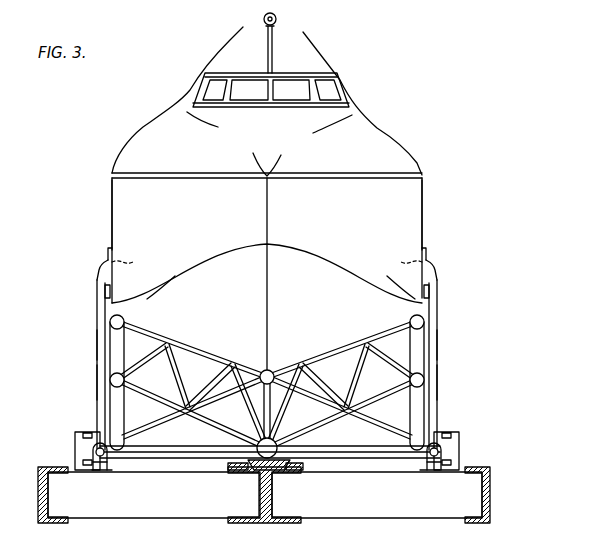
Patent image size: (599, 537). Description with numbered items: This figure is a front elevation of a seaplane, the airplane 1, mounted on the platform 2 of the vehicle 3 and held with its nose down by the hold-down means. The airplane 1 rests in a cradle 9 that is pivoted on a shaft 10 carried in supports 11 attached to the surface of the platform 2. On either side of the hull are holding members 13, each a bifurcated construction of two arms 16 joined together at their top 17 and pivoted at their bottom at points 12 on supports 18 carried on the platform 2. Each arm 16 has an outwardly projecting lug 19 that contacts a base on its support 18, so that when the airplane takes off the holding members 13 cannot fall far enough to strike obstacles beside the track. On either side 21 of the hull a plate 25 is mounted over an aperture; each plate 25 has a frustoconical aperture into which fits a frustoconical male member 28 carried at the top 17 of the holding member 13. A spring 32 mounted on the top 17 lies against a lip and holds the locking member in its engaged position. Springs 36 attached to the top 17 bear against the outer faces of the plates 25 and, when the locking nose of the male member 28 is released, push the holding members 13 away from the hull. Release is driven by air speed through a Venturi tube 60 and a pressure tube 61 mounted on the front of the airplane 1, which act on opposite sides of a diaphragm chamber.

The airplane 1 is at (393, 143).
The platform 2 is at (178, 467).
The vehicle 3 is at (500, 494).
The cradle 9 is at (333, 347).
The shaft 10 is at (345, 466).
The supports 11 is at (90, 432).
The pivot points 12 is at (95, 450).
The holding members 13 is at (89, 371).
The arms 16 is at (97, 335).
The top of holding member 17 is at (97, 288).
The supports 18 is at (115, 466).
The lug 19 is at (85, 455).
The side of hull 21 is at (110, 216).
The plate 25 is at (107, 246).
The frustoconical male member 28 is at (267, 263).
The spring 32 is at (100, 267).
The springs 36 is at (106, 300).
The Venturi tube 60 is at (278, 19).
The pressure tube 61 is at (265, 30).